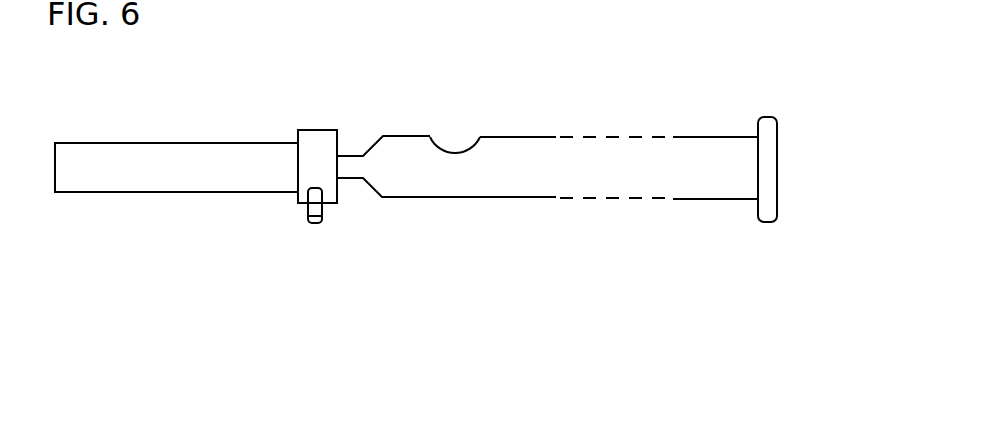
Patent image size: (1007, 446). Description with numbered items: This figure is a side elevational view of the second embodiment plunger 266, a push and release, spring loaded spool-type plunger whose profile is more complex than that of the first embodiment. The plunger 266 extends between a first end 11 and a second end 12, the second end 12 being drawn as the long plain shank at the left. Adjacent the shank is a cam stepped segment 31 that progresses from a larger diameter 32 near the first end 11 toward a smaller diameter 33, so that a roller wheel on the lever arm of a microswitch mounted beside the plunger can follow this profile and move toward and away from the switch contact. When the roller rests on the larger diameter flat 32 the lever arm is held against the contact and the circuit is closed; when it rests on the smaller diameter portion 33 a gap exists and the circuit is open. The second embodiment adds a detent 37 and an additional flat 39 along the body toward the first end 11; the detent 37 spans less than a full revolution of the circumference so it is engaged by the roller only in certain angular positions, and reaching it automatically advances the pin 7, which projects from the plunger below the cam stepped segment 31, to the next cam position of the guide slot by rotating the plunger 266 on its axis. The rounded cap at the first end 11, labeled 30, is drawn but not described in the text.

The second end 12 is at (88, 175).
The cam stepped segment 31 is at (370, 148).
The pin 7 is at (308, 211).
The larger diameter 32 is at (402, 135).
The smaller diameter 33 is at (350, 183).
The detent 37 is at (448, 150).
The flat 39 is at (513, 138).
The first end 11 is at (710, 157).
The second embodiment plunger 266 is at (713, 208).
The end cap 30 is at (778, 142).